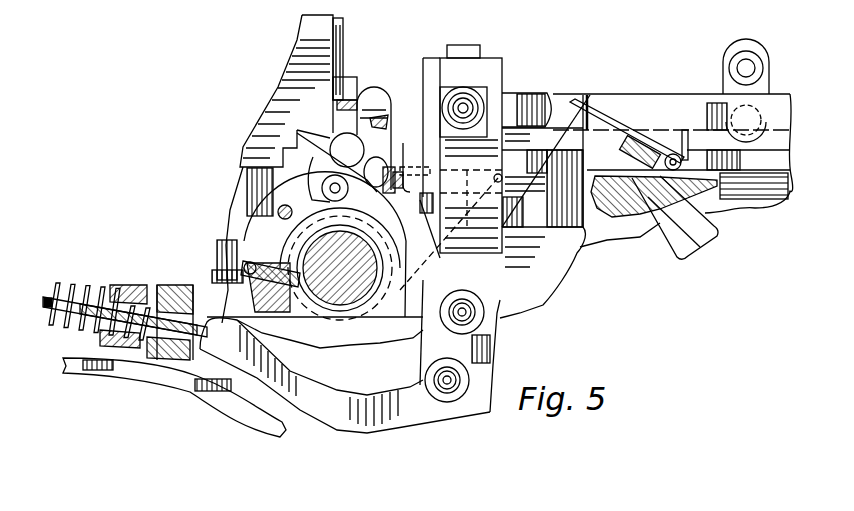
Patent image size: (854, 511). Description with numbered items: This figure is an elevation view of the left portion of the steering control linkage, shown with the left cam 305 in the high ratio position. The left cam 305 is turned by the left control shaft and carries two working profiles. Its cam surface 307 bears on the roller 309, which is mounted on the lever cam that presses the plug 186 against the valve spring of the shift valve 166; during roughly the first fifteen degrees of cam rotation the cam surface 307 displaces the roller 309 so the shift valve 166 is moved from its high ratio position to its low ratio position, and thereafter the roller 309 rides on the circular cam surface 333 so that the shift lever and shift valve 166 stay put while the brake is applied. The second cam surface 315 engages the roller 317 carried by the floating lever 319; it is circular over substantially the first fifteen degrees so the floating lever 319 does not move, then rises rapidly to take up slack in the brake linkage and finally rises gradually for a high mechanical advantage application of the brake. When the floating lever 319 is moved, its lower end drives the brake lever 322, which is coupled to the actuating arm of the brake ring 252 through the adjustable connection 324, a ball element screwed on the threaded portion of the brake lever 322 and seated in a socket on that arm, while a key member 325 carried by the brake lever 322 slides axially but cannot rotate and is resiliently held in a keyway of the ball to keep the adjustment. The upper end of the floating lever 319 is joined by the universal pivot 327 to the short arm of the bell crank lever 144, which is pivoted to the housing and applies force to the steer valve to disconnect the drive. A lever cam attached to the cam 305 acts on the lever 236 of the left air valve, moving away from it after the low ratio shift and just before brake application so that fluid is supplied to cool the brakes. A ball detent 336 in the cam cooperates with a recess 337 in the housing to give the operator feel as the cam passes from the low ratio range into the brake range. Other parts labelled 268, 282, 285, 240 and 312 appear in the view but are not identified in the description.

The shift valve 166 is at (297, 68).
The plug 186 is at (350, 78).
The arched member 268 is at (383, 98).
The cam surface 307 is at (388, 125).
The circular cam surface 333 is at (322, 138).
The recess 337 is at (245, 233).
The ball detent 336 is at (217, 270).
The key member 325 is at (93, 282).
The adjustable connection 324 is at (140, 283).
The brake ring 252 is at (145, 368).
The brake lever 322 is at (320, 414).
The left cam 305 is at (398, 325).
The roller 309 is at (398, 168).
The latch pin 312 is at (404, 183).
The second cam surface 315 is at (398, 268).
The floating lever 319 is at (505, 256).
The universal pivot 327 is at (468, 106).
The lever 236 is at (588, 97).
The lever 282 is at (650, 128).
The rail 240 is at (705, 94).
The bell crank lever 144 is at (772, 94).
The cylinder 285 is at (586, 236).
The roller 317 is at (505, 322).